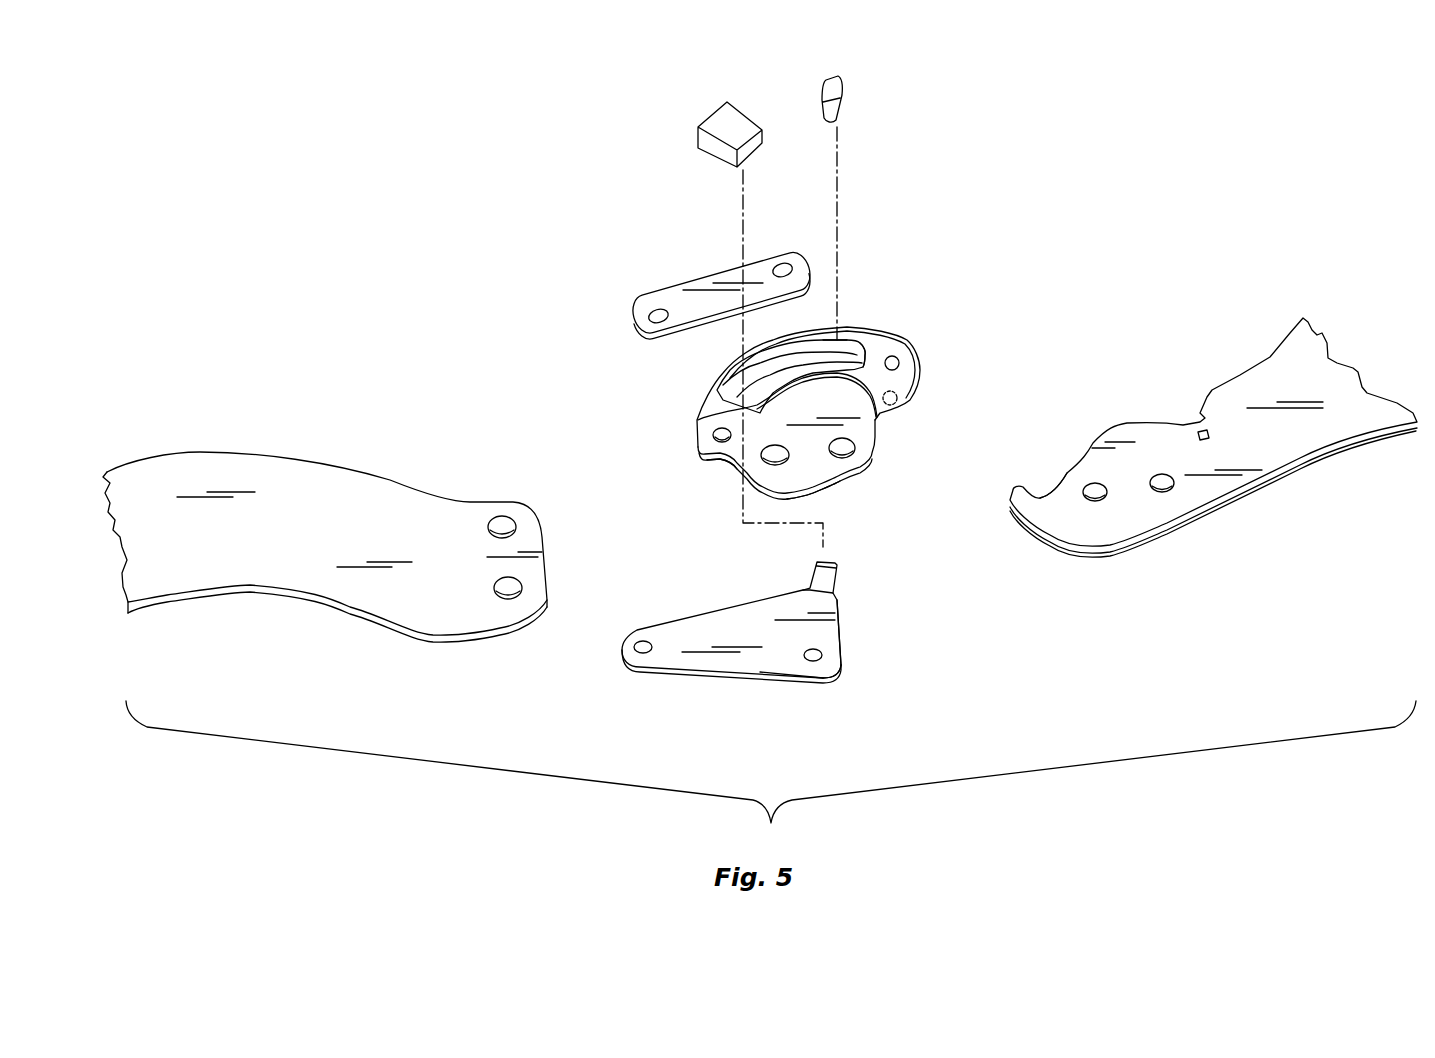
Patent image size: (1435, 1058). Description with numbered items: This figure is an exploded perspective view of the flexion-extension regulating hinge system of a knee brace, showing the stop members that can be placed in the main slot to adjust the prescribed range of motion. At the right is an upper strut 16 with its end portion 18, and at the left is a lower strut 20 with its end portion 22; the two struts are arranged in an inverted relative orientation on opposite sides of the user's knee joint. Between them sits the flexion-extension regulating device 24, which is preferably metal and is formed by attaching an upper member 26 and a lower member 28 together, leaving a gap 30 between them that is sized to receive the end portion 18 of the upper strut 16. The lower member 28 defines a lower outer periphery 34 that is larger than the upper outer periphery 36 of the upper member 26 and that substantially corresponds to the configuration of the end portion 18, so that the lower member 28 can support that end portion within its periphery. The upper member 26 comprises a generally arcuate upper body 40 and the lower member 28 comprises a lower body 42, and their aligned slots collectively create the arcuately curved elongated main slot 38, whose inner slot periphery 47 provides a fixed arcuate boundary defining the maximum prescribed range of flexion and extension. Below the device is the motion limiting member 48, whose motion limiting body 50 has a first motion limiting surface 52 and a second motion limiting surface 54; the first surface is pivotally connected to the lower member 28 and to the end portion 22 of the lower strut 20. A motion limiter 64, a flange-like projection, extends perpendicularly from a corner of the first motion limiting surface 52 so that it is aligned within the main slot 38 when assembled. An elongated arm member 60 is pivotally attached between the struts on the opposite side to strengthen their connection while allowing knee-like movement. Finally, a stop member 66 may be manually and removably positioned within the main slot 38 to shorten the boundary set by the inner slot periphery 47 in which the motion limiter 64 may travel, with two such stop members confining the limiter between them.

The upper strut 16 is at (1307, 340).
The end portion of upper strut 18 is at (1093, 460).
The lower strut 20 is at (203, 477).
The end portion of lower strut 22 is at (443, 512).
The flexion-extension regulating device 24 is at (784, 380).
The upper member 26 is at (880, 353).
The lower member 28 is at (852, 467).
The gap 30 is at (847, 397).
The lower outer periphery 34 is at (833, 490).
The upper outer periphery 36 is at (817, 333).
The elongated main slot 38 is at (765, 382).
The upper body 40 is at (898, 363).
The lower body 42 is at (757, 480).
The inner slot periphery 47 is at (847, 345).
The motion limiting member 48 is at (743, 655).
The motion limiting body 50 is at (783, 670).
The first motion limiting surface 52 is at (820, 635).
The second motion limiting surface 54 is at (807, 670).
The elongated arm member 60 is at (675, 292).
The motion limiter 64 is at (830, 575).
The stop member 66 is at (843, 86).